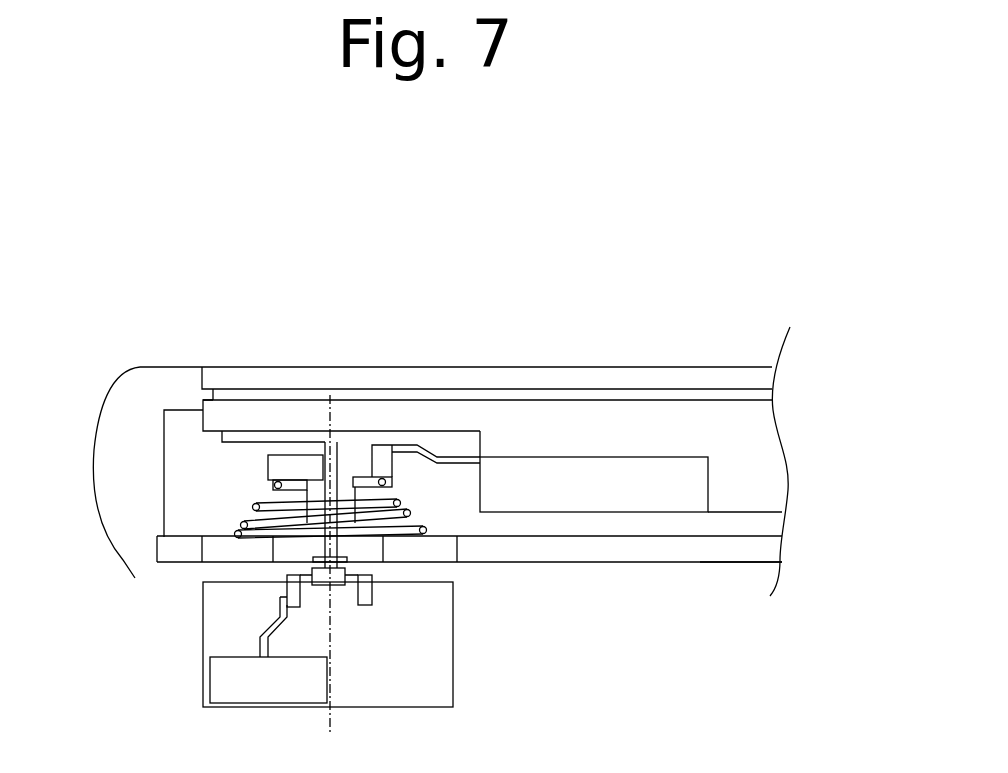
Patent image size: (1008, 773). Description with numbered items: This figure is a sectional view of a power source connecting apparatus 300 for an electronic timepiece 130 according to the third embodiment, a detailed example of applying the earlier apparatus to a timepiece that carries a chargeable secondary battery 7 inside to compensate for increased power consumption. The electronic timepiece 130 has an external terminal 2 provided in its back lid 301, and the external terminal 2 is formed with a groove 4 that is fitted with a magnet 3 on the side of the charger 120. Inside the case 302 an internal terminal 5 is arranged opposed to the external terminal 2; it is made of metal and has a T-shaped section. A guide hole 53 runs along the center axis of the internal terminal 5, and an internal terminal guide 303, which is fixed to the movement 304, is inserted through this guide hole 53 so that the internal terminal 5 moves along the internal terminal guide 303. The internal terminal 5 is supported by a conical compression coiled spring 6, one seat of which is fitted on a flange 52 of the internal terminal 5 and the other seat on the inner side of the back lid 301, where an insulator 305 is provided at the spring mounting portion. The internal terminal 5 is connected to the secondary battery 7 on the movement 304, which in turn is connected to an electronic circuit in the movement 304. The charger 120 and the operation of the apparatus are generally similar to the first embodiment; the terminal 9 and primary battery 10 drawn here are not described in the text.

The power source connecting apparatus 300 is at (289, 285).
The electronic timepiece 130 is at (798, 416).
The charger 120 is at (797, 662).
The case 302 is at (172, 382).
The internal terminal guide 303 is at (288, 438).
The movement 304 is at (617, 415).
The insulator 305 is at (447, 561).
The back lid 301 is at (585, 563).
The secondary battery 7 is at (708, 485).
The internal terminal 5 is at (267, 465).
The compression coiled spring 6 is at (253, 507).
The flange 52 is at (375, 470).
The guide hole 53 is at (336, 470).
The groove 4 is at (325, 560).
The external terminal 2 is at (300, 562).
The magnet 3 is at (333, 600).
The battery terminal 9 is at (333, 585).
The primary battery 10 is at (207, 683).